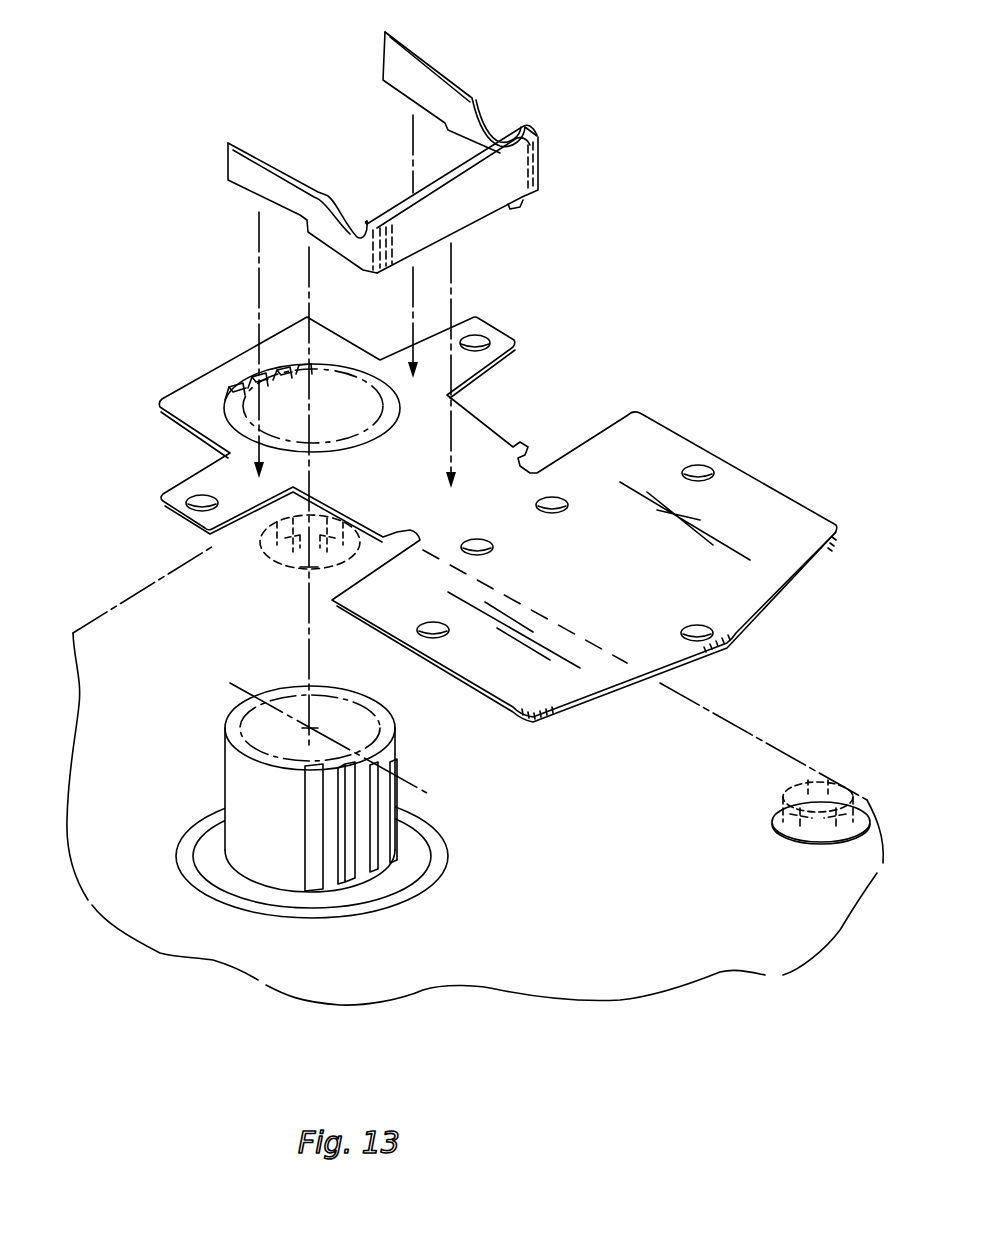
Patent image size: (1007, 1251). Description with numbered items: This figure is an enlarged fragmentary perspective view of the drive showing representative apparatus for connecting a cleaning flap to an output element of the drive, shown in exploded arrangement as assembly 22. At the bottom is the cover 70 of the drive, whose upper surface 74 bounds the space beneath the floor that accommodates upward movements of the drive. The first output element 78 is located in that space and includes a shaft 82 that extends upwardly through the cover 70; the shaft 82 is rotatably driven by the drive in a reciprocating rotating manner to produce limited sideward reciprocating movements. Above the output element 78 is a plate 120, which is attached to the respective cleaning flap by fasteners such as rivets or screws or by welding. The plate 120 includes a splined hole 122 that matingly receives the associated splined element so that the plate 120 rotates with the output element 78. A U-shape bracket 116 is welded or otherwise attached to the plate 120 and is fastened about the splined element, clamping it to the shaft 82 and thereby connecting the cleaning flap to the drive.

The mounting assembly 22 is at (670, 119).
The cover 70 is at (475, 803).
The upper surface 74 is at (333, 972).
The first output element 78 is at (224, 743).
The shaft 82 is at (217, 828).
The U-shape bracket 116 is at (433, 68).
The plate 120 is at (677, 430).
The splined hole 122 is at (222, 415).